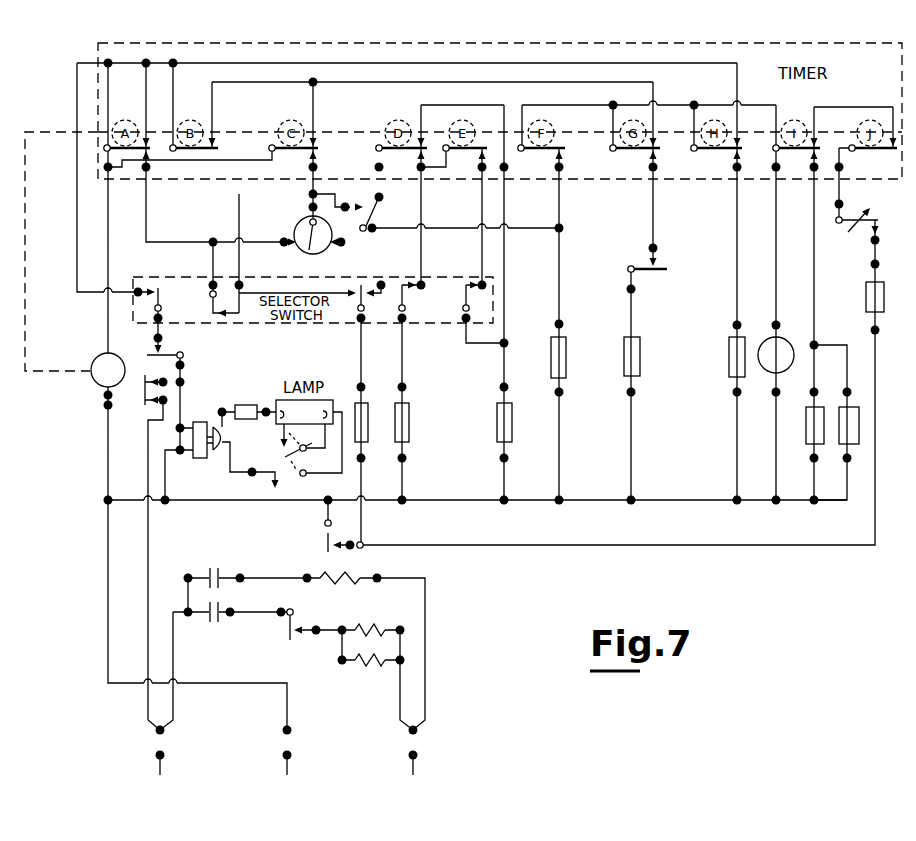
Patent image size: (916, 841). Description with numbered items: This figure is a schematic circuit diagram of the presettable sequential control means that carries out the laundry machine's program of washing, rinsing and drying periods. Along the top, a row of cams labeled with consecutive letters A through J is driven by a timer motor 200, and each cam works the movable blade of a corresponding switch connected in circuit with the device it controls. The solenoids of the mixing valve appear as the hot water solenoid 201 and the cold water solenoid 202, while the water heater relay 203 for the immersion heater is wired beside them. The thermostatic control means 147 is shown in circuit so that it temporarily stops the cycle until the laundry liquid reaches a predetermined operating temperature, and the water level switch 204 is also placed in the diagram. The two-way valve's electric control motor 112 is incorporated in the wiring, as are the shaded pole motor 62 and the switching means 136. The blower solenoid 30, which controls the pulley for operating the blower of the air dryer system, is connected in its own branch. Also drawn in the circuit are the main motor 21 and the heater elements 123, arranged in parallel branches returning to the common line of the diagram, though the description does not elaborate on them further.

The timer motor 200 is at (95, 383).
The thermostatic control means 147 is at (294, 226).
The water level switch 204 is at (373, 211).
The switching means 136 is at (657, 252).
The shaded pole motor 62 is at (640, 360).
The electric control motor 112 is at (566, 365).
The blower solenoid 30 is at (729, 370).
The main motor 21 is at (780, 337).
The heater elements 123 is at (806, 430).
The cold water solenoid 202 is at (497, 420).
The hot water solenoid 201 is at (409, 425).
The water heater relay 203 is at (368, 430).